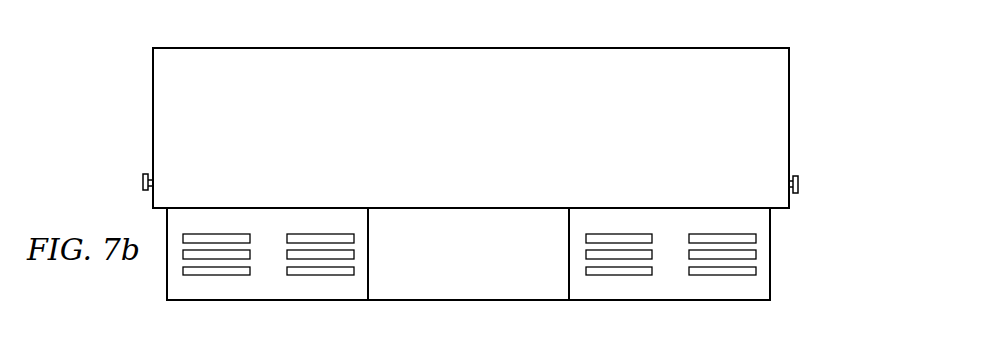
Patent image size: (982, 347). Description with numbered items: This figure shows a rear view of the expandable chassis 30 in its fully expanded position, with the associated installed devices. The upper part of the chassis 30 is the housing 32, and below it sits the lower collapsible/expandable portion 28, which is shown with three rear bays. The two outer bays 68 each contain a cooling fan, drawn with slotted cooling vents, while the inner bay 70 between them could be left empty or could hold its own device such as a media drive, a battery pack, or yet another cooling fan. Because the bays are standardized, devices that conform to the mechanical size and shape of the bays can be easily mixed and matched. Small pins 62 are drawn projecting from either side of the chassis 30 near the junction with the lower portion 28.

The chassis 30 is at (451, 174).
The sign housing 32 is at (790, 112).
The lower collapsible/expandable portion 28 is at (499, 233).
The mounting pins 62 is at (140, 178).
The outer bays 68 is at (267, 215).
The inner bay 70 is at (465, 215).